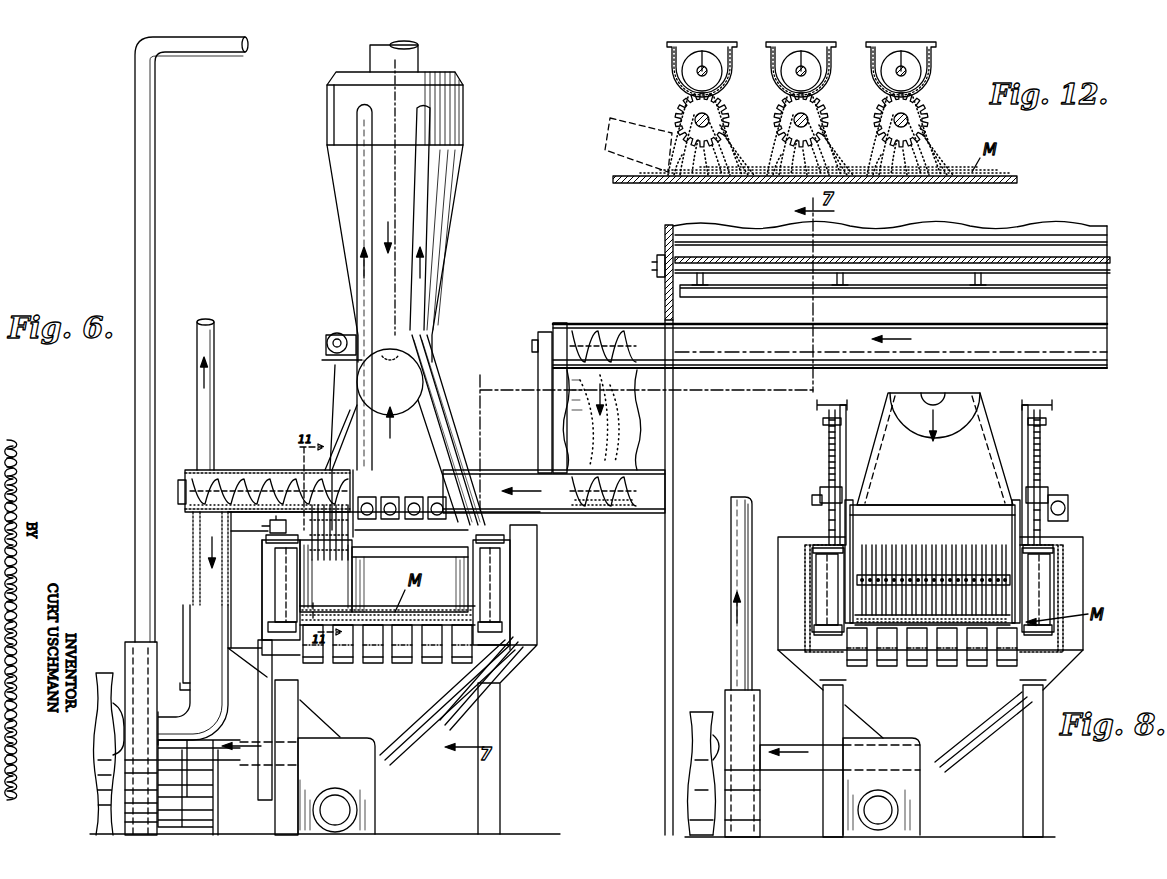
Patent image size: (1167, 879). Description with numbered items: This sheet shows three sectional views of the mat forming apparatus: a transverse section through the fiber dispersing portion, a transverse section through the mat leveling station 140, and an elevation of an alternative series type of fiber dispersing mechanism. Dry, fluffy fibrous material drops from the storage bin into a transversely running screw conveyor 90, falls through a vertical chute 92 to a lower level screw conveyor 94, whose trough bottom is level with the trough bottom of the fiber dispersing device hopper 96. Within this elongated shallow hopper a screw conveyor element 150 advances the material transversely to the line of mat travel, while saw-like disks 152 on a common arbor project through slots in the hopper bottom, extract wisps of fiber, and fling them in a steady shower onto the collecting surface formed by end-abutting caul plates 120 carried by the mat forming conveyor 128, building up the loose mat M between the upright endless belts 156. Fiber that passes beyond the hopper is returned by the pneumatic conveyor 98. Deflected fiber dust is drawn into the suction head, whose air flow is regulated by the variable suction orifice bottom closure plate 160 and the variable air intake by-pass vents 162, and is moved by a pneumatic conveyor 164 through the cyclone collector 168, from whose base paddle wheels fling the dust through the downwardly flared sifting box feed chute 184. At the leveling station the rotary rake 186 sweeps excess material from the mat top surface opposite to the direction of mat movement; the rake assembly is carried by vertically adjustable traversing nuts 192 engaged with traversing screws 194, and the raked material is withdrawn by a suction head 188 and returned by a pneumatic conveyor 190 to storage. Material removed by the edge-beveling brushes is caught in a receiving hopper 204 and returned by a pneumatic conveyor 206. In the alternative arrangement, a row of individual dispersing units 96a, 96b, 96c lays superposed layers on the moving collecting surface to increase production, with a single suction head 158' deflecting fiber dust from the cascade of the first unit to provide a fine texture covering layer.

In FIG. 6, the pneumatic conveyor 98 is at (156, 246).
In FIG. 6, the cyclone collector 168 is at (462, 128).
In FIG. 6, the pneumatic conveyor 164 is at (358, 297).
In FIG. 6, the pneumatic conveyor 190 is at (420, 300).
In FIG. 6, the sifting box feed chute 184 is at (432, 392).
In FIG. 6, the fiber dispersing device hopper 96 is at (326, 466).
In FIG. 12, the fibrous material dispersing unit 96a is at (722, 72).
In FIG. 12, the fibrous material dispersing unit 96b is at (820, 72).
In FIG. 12, the fibrous material dispersing unit 96c is at (920, 72).
In FIG. 6, the variable air intake by-pass vents 162 is at (412, 497).
In FIG. 6, the screw conveyor element 150 is at (250, 478).
In FIG. 6, the toothed rotary elements or saw-like disks 152 is at (300, 478).
In FIG. 6, the pneumatic conveyor 206 is at (196, 446).
In FIG. 8, the pneumatic conveyor 206 is at (730, 660).
In FIG. 6, the endless belts 156 is at (282, 600).
In FIG. 8, the endless belts 156 is at (1047, 582).
In FIG. 6, the suction head 188 is at (305, 570).
In FIG. 6, the variable suction orifice bottom closure plate 160 is at (402, 575).
In FIG. 6, the mat forming conveyor 128 is at (440, 668).
In FIG. 8, the mat forming conveyor 128 is at (965, 668).
In FIG. 6, the receiving hopper 204 is at (406, 754).
In FIG. 8, the receiving hopper 204 is at (952, 752).
In FIG. 6, the lower level screw conveyor 94 is at (575, 512).
In FIG. 6, the vertical chute 92 is at (644, 430).
In FIG. 8, the screw conveyor 90 is at (1066, 371).
In FIG. 12, the caul plates 120 is at (1018, 180).
In FIG. 12, the suction head 158' is at (618, 145).
In FIG. 8, the rotary rake 186 is at (925, 555).
In FIG. 8, the traversing screws 194 is at (828, 452).
In FIG. 8, the traversing nuts 192 is at (820, 492).
In FIG. 8, the mat leveling station 140 is at (870, 845).